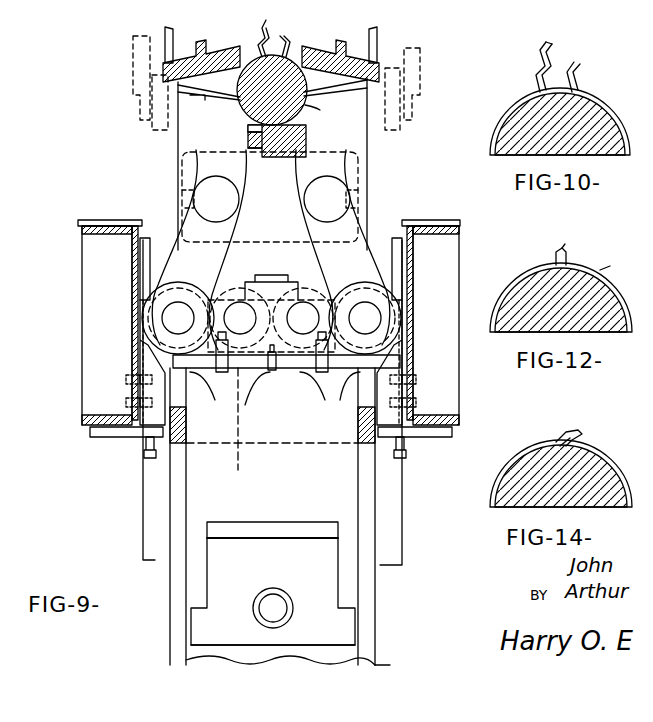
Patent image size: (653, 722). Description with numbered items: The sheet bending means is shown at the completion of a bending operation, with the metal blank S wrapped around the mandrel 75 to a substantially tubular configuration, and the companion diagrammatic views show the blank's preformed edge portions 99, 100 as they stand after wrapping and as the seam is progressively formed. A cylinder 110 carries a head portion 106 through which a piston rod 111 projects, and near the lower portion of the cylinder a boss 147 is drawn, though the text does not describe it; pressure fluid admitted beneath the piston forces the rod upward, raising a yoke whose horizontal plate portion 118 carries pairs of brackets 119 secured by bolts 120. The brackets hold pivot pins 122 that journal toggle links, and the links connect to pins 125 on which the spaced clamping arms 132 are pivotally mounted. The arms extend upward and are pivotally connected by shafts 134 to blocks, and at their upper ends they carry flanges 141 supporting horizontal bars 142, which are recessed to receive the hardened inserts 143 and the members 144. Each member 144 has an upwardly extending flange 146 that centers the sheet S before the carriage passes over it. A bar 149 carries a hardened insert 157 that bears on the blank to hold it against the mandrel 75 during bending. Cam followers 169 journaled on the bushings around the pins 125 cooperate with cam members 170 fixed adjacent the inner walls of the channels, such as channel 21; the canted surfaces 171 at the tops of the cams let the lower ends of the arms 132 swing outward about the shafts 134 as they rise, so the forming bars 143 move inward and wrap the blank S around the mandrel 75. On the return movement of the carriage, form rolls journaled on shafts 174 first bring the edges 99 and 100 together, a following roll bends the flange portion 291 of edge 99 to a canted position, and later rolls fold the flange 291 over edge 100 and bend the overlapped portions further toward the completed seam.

In FIG. 9, the channel 21 is at (130, 282).
In FIG. 9, the mandrel 75 is at (272, 90).
In FIG. 10, the mandrel 75 is at (602, 112).
In FIG. 12, the mandrel 75 is at (606, 292).
In FIG. 14, the mandrel 75 is at (606, 468).
In FIG. 9, the preformed edge portion 99 is at (253, 30).
In FIG. 10, the preformed edge portion 99 is at (528, 65).
In FIG. 12, the preformed edge portion 99 is at (548, 251).
In FIG. 9, the preformed edge portion 100 is at (285, 38).
In FIG. 10, the preformed edge portion 100 is at (580, 74).
In FIG. 9, the head portion 106 is at (218, 562).
In FIG. 9, the cylinder 110 is at (380, 664).
In FIG. 9, the piston rod 111 is at (240, 478).
In FIG. 9, the plate portion 118 is at (210, 370).
In FIG. 9, the brackets 119 is at (312, 356).
In FIG. 9, the bolts 120 is at (272, 372).
In FIG. 9, the pivot pins 122 is at (266, 310).
In FIG. 9, the pins 125 is at (178, 318).
In FIG. 9, the clamping arms 132 is at (178, 148).
In FIG. 9, the shafts 134 is at (203, 186).
In FIG. 9, the flanges 141 is at (185, 84).
In FIG. 9, the bars 142 is at (165, 62).
In FIG. 9, the hardened inserts 143 is at (232, 28).
In FIG. 9, the members 144 is at (138, 40).
In FIG. 9, the flange 146 is at (163, 40).
In FIG. 9, the boss 147 is at (278, 596).
In FIG. 9, the bar 149 is at (296, 145).
In FIG. 9, the hardened insert 157 is at (248, 140).
In FIG. 9, the cam followers 169 is at (150, 280).
In FIG. 9, the cam members 170 is at (150, 438).
In FIG. 9, the canted surfaces 171 is at (150, 360).
In FIG. 9, the shafts 174 is at (228, 290).
In FIG. 10, the flange portion 291 is at (555, 46).
In FIG. 12, the flange portion 291 is at (567, 250).
In FIG. 9, the blank S is at (319, 112).
In FIG. 12, the blank S is at (611, 263).